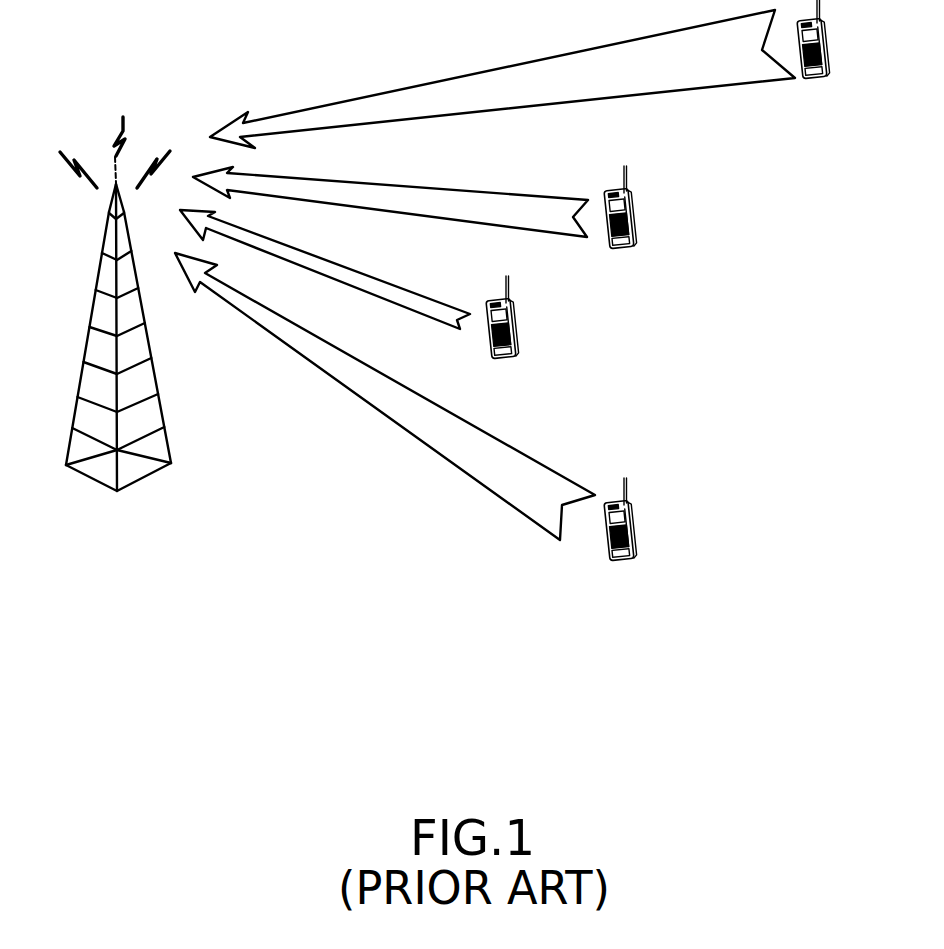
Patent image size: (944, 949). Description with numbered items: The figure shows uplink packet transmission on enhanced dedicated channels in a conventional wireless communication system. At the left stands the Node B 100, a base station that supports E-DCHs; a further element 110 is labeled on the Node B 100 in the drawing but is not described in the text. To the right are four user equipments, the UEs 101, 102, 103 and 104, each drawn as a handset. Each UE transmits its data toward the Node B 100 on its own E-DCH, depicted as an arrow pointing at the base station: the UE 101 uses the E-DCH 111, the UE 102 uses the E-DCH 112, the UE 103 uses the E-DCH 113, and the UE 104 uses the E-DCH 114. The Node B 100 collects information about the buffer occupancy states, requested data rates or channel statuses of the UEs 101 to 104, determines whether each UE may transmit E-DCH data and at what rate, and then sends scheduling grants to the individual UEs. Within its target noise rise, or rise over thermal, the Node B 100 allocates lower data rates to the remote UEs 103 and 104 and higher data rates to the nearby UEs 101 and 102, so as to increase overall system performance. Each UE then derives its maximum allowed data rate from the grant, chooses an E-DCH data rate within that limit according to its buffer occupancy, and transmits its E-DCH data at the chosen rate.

The Node B 100 is at (128, 325).
The Node B antenna tower 110 is at (147, 342).
The UE 101 is at (513, 335).
The UE 102 is at (632, 227).
The UE 103 is at (632, 538).
The UE 104 is at (824, 56).
The E-DCH 111 is at (362, 273).
The E-DCH 112 is at (410, 186).
The E-DCH 113 is at (402, 381).
The E-DCH 114 is at (509, 65).